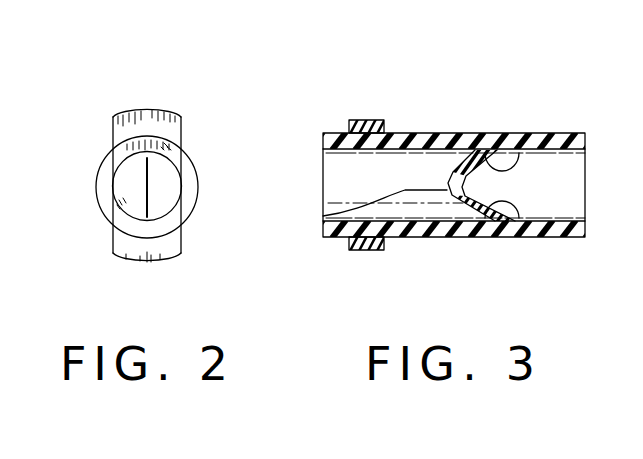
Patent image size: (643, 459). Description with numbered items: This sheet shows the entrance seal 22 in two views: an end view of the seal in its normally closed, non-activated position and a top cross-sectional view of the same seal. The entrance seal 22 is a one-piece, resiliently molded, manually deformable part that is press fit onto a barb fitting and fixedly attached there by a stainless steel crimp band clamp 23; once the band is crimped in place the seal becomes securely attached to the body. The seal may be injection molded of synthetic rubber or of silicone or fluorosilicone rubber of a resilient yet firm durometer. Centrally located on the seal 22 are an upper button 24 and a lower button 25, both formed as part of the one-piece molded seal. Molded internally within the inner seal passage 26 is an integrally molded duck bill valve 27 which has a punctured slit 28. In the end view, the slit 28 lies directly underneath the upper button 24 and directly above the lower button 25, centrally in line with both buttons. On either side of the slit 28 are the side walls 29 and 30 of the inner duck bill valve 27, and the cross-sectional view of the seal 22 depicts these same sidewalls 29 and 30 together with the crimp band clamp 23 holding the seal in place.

In FIG. 2, the entrance seal 22 is at (102, 164).
In FIG. 3, the entrance seal 22 is at (402, 132).
In FIG. 3, the crimp band clamp 23 is at (367, 118).
In FIG. 2, the upper button 24 is at (147, 111).
In FIG. 2, the lower button 25 is at (120, 260).
In FIG. 2, the inner seal passage 26 is at (178, 192).
In FIG. 3, the inner seal passage 26 is at (576, 179).
In FIG. 2, the duck bill valve 27 is at (117, 195).
In FIG. 3, the duck bill valve 27 is at (457, 200).
In FIG. 2, the punctured slit 28 is at (148, 185).
In FIG. 3, the punctured slit 28 is at (323, 216).
In FIG. 2, the side wall 29 is at (158, 209).
In FIG. 3, the side wall 29 is at (522, 153).
In FIG. 2, the side wall 30 is at (132, 164).
In FIG. 3, the side wall 30 is at (521, 219).